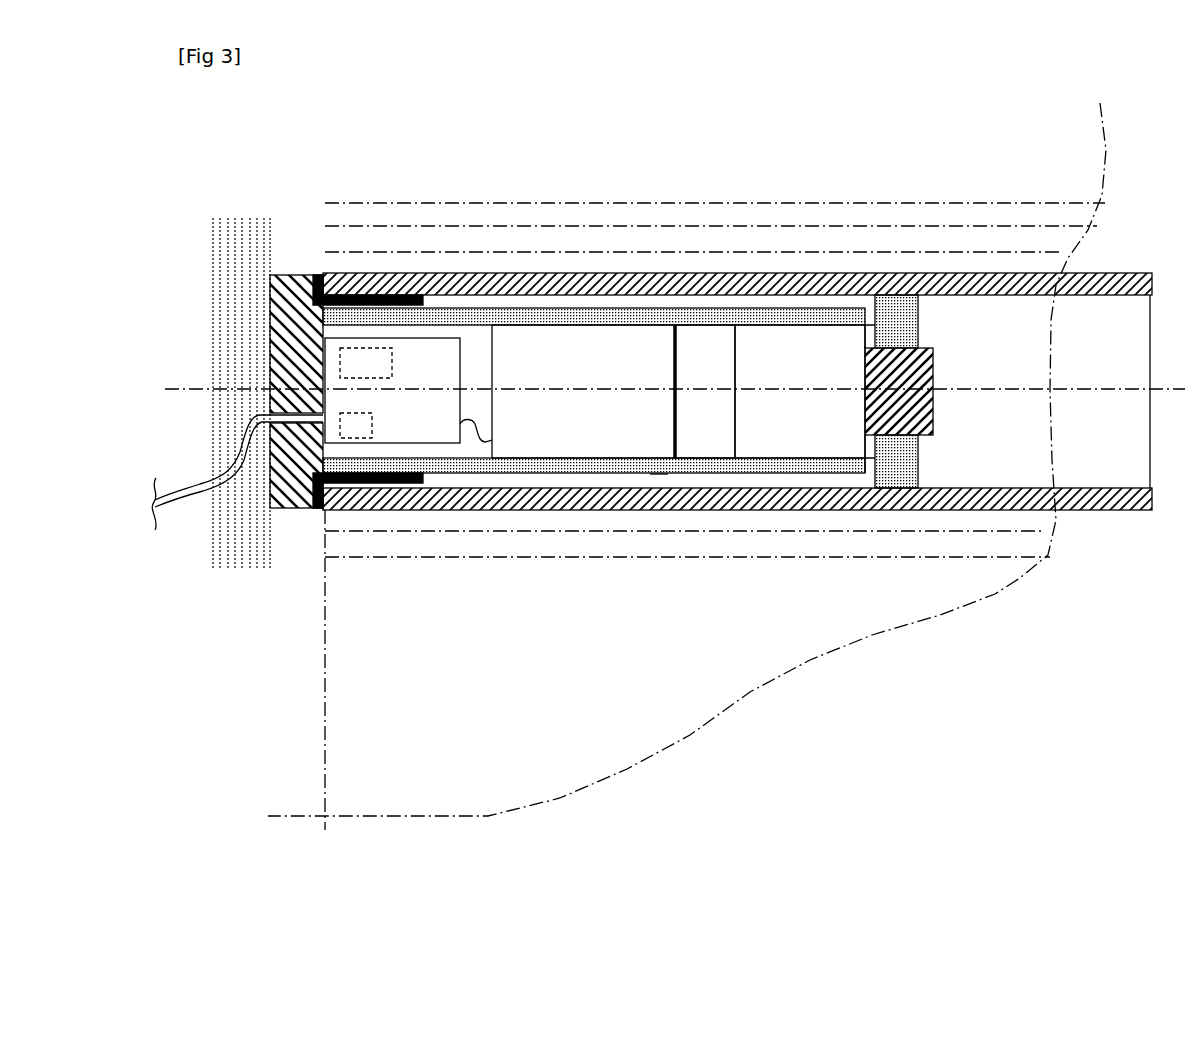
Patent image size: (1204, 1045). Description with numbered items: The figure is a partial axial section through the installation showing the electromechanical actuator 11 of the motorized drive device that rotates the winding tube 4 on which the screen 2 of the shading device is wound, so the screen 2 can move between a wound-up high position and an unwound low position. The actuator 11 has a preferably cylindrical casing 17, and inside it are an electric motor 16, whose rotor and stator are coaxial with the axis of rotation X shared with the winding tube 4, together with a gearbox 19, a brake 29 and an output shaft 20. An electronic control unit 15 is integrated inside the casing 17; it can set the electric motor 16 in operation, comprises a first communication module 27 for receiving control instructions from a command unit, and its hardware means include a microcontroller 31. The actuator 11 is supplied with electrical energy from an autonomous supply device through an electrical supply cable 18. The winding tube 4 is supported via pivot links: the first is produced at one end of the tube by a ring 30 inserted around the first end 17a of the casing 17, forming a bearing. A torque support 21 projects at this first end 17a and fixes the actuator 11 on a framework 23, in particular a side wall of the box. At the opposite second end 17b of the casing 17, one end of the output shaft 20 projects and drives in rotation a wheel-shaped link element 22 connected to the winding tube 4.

The screen 2 is at (981, 217).
The winding tube 4 is at (1123, 273).
The electromechanical actuator 11 is at (658, 474).
The electronic control unit 15 is at (424, 355).
The electric motor 16 is at (610, 353).
The casing 17 is at (546, 318).
The first end of the casing 17a is at (324, 509).
The second end of the casing 17b is at (866, 468).
The electrical supply cable 18 is at (188, 497).
The gearbox 19 is at (812, 355).
The output shaft 20 is at (921, 344).
The torque support 21 is at (300, 288).
The link element 22 is at (905, 467).
The framework 23 is at (240, 248).
The first communication module 27 is at (362, 357).
The brake 29 is at (702, 365).
The ring 30 is at (400, 298).
The microcontroller 31 is at (360, 426).
The axis of rotation X is at (578, 392).